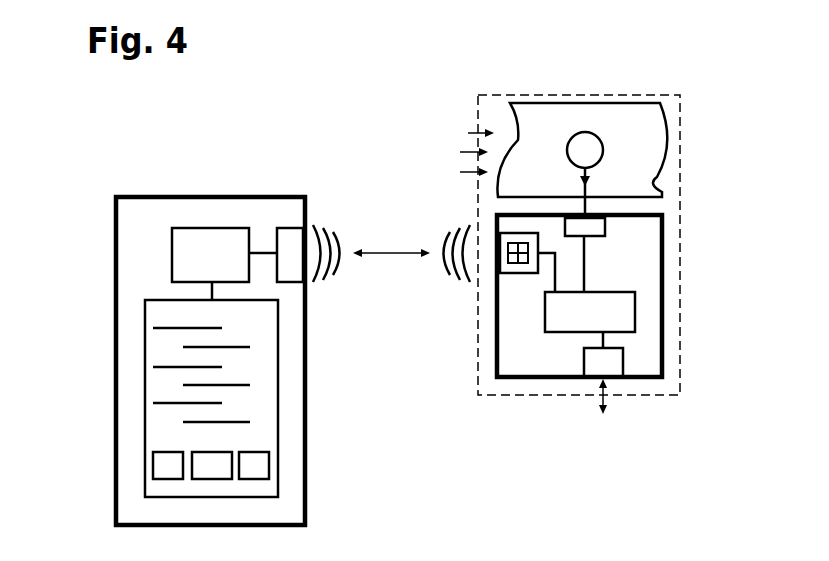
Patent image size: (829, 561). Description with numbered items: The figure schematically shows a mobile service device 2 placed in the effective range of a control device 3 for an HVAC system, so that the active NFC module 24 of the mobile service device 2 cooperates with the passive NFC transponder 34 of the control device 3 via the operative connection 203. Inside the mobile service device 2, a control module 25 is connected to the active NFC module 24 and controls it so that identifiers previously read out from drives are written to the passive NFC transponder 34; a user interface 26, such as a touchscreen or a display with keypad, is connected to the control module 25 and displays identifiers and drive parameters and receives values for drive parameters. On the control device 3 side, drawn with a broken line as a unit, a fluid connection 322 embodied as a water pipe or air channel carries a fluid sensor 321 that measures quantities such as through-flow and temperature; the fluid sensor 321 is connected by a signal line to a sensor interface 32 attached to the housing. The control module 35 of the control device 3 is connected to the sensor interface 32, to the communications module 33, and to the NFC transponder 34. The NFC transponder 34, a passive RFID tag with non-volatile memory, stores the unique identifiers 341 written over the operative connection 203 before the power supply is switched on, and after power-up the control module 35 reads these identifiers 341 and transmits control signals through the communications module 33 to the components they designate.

The mobile service device 2 is at (345, 509).
The control device 3 is at (672, 434).
The active NFC module 24 is at (290, 235).
The control module 25 is at (190, 244).
The user interface 26 is at (153, 312).
The operative connection 203 is at (391, 259).
The sensor interface 32 is at (595, 227).
The communications module 33 is at (613, 358).
The passive NFC transponder 34 is at (517, 275).
The control module 35 is at (613, 302).
The fluid sensor 321 is at (595, 152).
The fluid connection 322 is at (642, 132).
The unique identifiers 341 is at (500, 235).